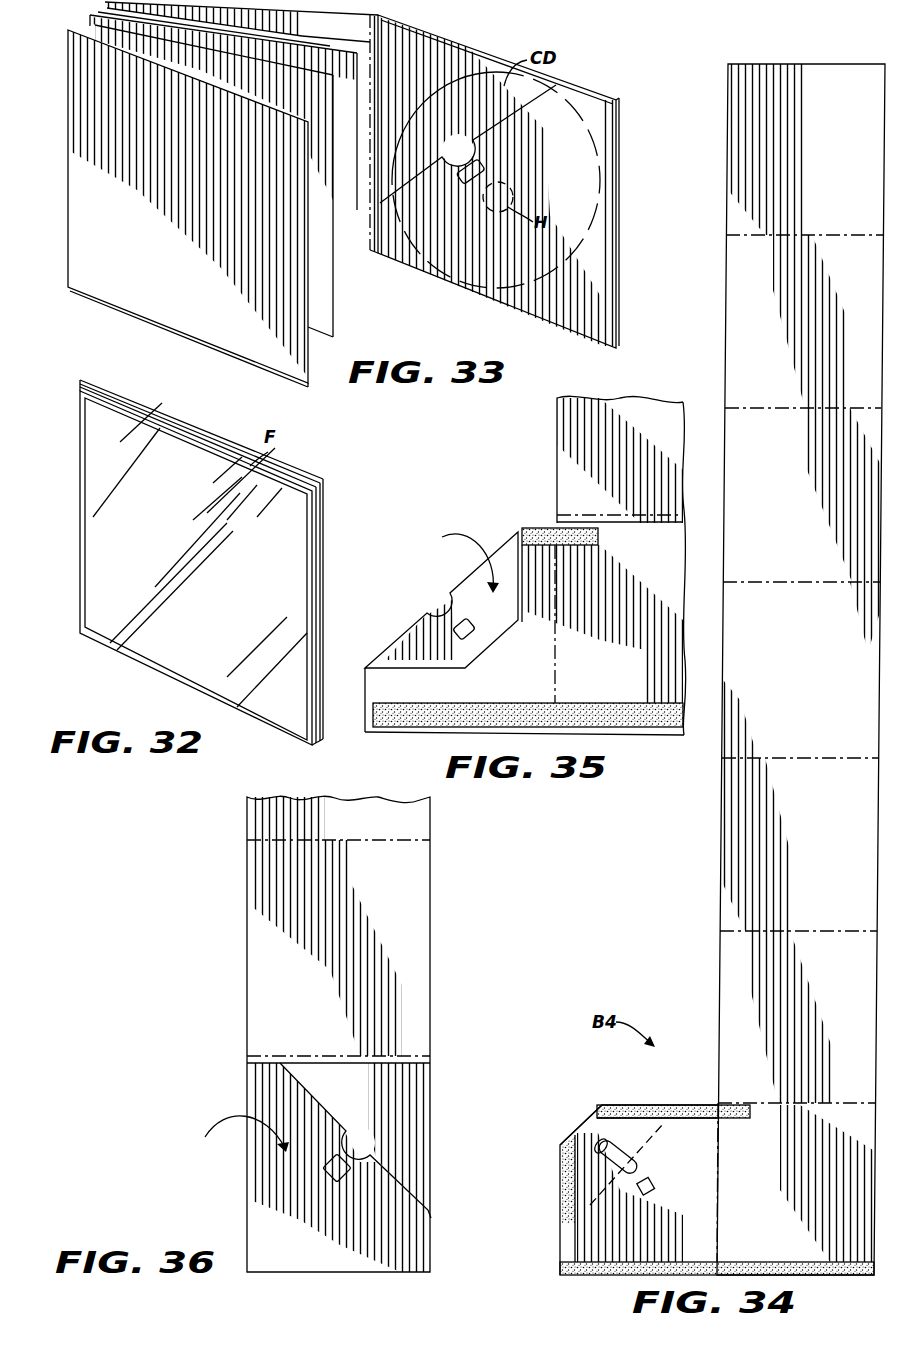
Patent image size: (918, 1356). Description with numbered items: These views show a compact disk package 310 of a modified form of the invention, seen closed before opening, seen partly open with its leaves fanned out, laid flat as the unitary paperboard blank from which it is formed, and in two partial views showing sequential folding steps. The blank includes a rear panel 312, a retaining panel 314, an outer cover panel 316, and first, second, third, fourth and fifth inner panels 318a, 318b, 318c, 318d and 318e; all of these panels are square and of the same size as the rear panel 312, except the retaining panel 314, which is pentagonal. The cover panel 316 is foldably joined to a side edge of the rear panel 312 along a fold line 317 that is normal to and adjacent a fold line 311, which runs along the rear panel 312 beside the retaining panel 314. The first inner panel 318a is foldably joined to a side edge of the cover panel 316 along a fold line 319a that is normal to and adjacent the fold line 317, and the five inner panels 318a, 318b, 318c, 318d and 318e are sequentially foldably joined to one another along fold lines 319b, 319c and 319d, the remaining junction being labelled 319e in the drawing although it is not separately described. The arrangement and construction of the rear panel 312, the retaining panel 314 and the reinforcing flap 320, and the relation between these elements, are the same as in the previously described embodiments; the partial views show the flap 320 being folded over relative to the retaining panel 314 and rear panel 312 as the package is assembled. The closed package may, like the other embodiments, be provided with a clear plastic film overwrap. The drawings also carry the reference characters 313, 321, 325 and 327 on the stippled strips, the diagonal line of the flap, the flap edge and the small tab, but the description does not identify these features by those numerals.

In FIG. 32, the compact disk package 310 is at (341, 497).
In FIG. 34, the fold line 311 is at (718, 1165).
In FIG. 33, the rear panel 312 is at (437, 48).
In FIG. 35, the rear panel 312 is at (630, 686).
In FIG. 34, the rear panel 312 is at (810, 1213).
In FIG. 36, the rear panel 312 is at (377, 1104).
In FIG. 35, the adhesive strip 313 is at (598, 541).
In FIG. 34, the adhesive strip 313 is at (665, 1105).
In FIG. 33, the retaining panel 314 is at (586, 190).
In FIG. 35, the retaining panel 314 is at (529, 686).
In FIG. 34, the retaining panel 314 is at (700, 1234).
In FIG. 36, the retaining panel 314 is at (310, 1248).
In FIG. 33, the outer cover panel 316 is at (353, 42).
In FIG. 32, the outer cover panel 316 is at (208, 588).
In FIG. 35, the outer cover panel 316 is at (660, 461).
In FIG. 34, the outer cover panel 316 is at (818, 1031).
In FIG. 36, the outer cover panel 316 is at (356, 961).
In FIG. 34, the fold line 317 is at (778, 1103).
In FIG. 36, the fold line 317 is at (292, 1057).
In FIG. 33, the first inner panel 318a is at (108, 10).
In FIG. 34, the first inner panel 318a is at (824, 859).
In FIG. 36, the first inner panel 318a is at (372, 828).
In FIG. 33, the second inner panel 318b is at (215, 40).
In FIG. 34, the second inner panel 318b is at (824, 684).
In FIG. 33, the third inner panel 318c is at (124, 36).
In FIG. 34, the third inner panel 318c is at (826, 512).
In FIG. 33, the fourth inner panel 318d is at (295, 100).
In FIG. 34, the fourth inner panel 318d is at (826, 337).
In FIG. 33, the fifth inner panel 318e is at (250, 198).
In FIG. 34, the fifth inner panel 318e is at (830, 164).
In FIG. 34, the fold line 319a is at (782, 930).
In FIG. 36, the fold line 319a is at (372, 840).
In FIG. 34, the fold line 319b is at (782, 757).
In FIG. 34, the fold line 319c is at (783, 581).
In FIG. 34, the fold line 319d is at (783, 407).
In FIG. 34, the fold line 319e is at (786, 234).
In FIG. 35, the reinforcing flap 320 is at (413, 636).
In FIG. 34, the reinforcing flap 320 is at (595, 1124).
In FIG. 34, the fold line 321 is at (663, 1124).
In FIG. 34, the flap edge 325 is at (580, 1127).
In FIG. 33, the locking tab 327 is at (470, 172).
In FIG. 34, the locking tab 327 is at (623, 1185).
In FIG. 36, the locking tab 327 is at (337, 1168).